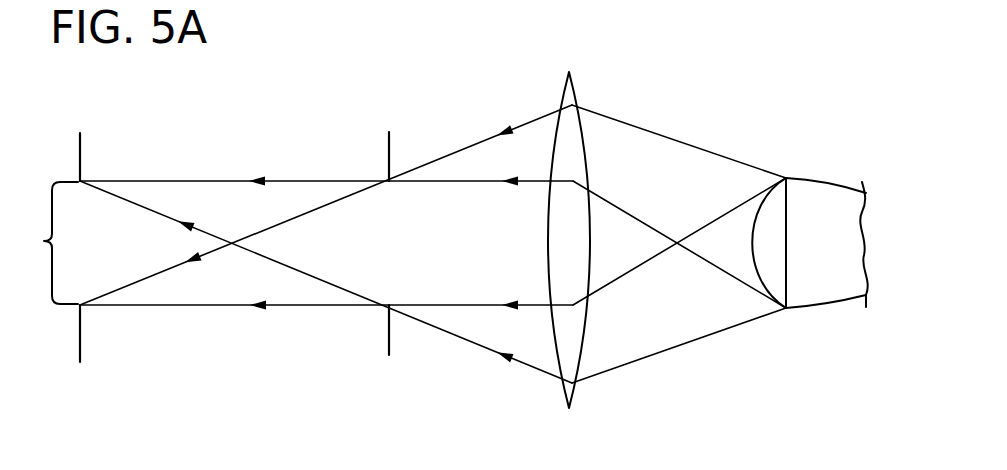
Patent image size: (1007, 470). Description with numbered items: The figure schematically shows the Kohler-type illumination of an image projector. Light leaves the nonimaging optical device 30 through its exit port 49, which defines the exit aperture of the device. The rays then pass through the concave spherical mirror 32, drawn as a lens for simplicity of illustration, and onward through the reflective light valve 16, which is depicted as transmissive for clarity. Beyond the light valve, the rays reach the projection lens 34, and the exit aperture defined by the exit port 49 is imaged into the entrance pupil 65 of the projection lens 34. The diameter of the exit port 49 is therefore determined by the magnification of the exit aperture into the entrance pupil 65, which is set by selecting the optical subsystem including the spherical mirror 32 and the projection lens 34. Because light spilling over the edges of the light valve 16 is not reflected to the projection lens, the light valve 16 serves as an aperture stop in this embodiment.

The light valve 16 is at (390, 153).
The nonimaging optical device 30 is at (823, 186).
The concave spherical mirror 32 is at (568, 100).
The projection lens 34 is at (82, 155).
The exit port 49 is at (772, 273).
The entrance pupil 65 is at (44, 241).